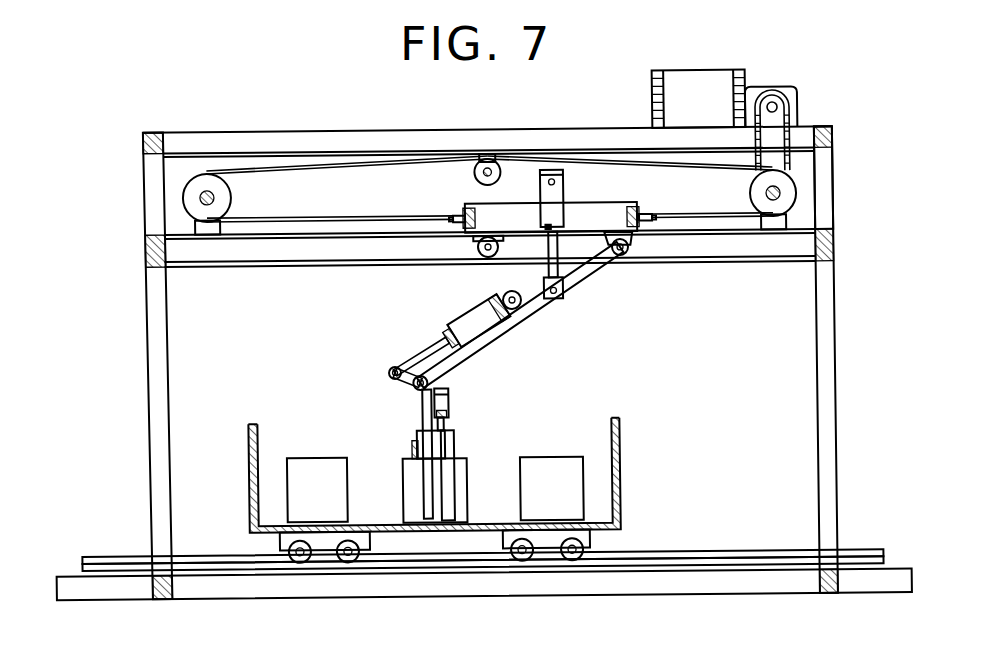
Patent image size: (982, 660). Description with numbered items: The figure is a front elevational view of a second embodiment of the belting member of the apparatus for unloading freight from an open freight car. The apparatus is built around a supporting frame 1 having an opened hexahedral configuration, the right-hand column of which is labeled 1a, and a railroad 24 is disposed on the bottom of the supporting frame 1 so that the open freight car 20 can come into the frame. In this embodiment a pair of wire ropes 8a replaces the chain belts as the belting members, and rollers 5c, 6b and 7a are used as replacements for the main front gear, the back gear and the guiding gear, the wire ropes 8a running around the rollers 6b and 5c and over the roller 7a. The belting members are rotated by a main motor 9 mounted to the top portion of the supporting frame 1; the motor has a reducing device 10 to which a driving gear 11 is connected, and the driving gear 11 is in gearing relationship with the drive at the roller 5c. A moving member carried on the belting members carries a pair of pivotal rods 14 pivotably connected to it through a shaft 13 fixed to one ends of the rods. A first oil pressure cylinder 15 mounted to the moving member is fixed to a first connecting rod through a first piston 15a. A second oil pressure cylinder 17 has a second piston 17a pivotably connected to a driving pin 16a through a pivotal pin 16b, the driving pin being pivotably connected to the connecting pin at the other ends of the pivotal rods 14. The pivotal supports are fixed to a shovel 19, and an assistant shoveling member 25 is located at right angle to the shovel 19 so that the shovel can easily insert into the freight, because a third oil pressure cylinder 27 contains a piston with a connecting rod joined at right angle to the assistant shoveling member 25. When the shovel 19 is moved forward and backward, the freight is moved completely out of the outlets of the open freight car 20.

The supporting frame 1 is at (836, 303).
The frame column 1a is at (825, 184).
The roller 5c is at (789, 206).
The roller 6b is at (192, 196).
The roller 7a is at (496, 159).
The wire ropes 8a is at (308, 163).
The main motor 9 is at (708, 85).
The reducing device 10 is at (757, 93).
The driving gear 11 is at (803, 104).
The shaft 13 is at (633, 258).
The pivotal rods 14 is at (583, 273).
The first oil pressure cylinder 15 is at (557, 172).
The first piston 15a is at (545, 262).
The driving pin 16a is at (412, 385).
The pivotal pin 16b is at (390, 370).
The second oil pressure cylinder 17 is at (457, 317).
The second piston 17a is at (413, 352).
The shovel 19 is at (422, 497).
The open freight car 20 is at (613, 457).
The railroad 24 is at (678, 553).
The assistant shoveling member 25 is at (447, 508).
The third oil pressure cylinder 27 is at (450, 397).